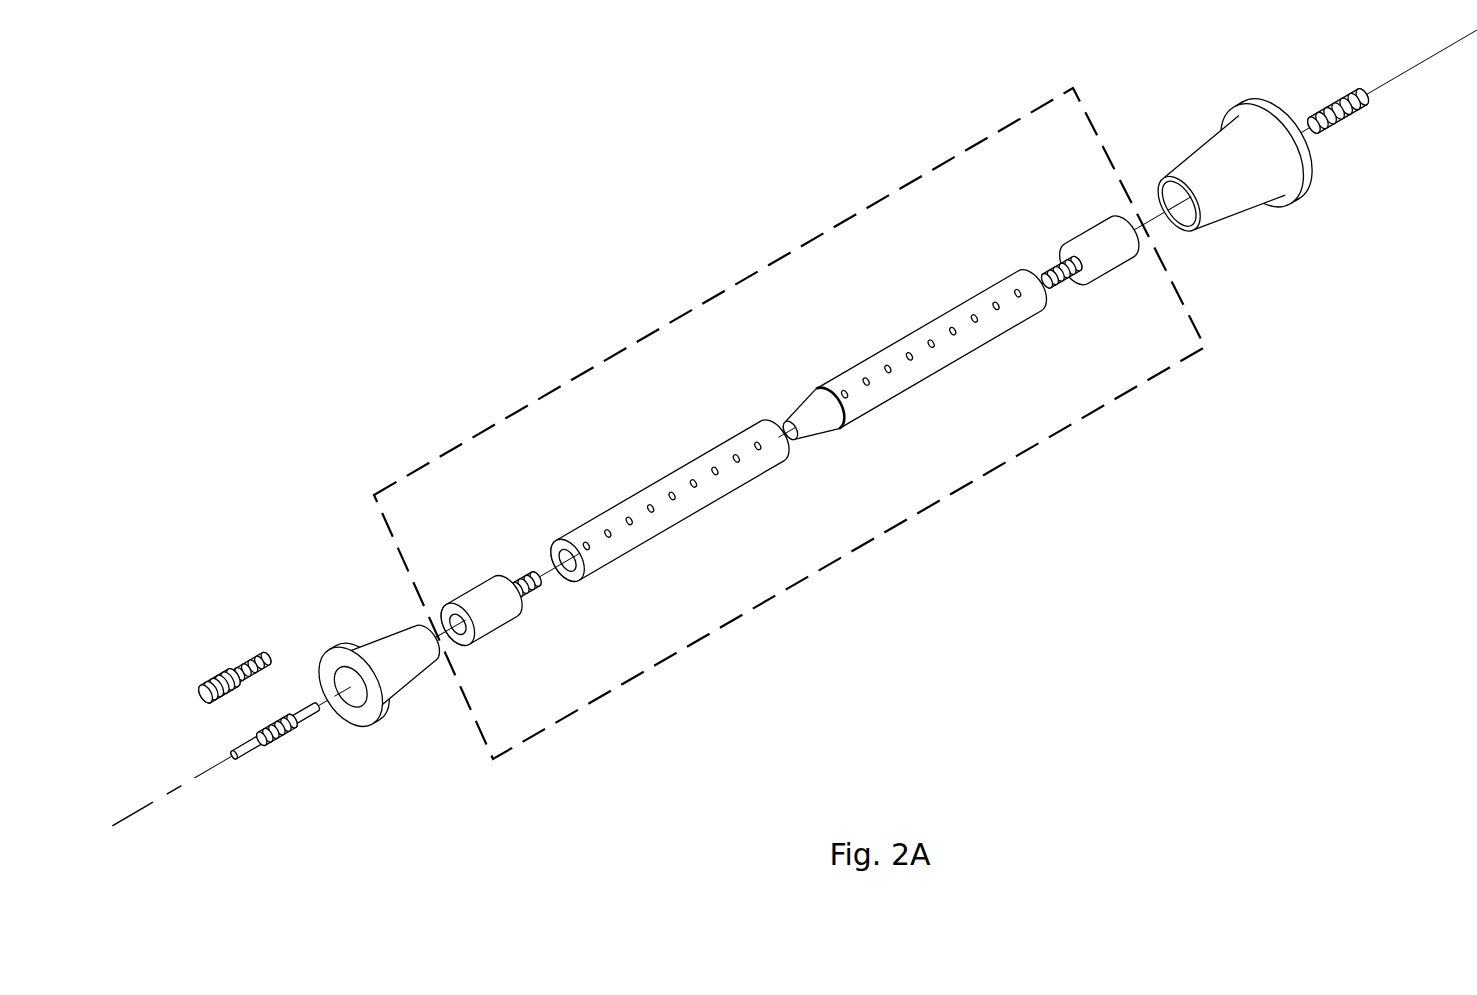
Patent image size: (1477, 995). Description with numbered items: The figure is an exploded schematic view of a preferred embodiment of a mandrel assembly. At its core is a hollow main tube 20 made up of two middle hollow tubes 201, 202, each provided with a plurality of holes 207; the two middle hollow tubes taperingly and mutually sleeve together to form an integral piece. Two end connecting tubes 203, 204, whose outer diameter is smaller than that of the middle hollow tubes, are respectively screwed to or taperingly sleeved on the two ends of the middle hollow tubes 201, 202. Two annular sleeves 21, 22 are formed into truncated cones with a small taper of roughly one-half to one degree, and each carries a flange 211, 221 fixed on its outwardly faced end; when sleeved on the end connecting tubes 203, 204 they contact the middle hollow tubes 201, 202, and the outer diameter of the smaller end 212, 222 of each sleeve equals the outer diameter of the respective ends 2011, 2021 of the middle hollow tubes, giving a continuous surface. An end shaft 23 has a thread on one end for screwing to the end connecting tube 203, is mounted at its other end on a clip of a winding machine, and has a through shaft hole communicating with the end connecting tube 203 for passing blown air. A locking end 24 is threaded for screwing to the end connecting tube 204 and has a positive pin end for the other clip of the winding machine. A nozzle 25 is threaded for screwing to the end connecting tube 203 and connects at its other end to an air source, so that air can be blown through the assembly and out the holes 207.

The hollow main tube 20 is at (716, 279).
The middle hollow tube 201 is at (626, 497).
The end of middle hollow tube 2011 is at (567, 560).
The middle hollow tube 202 is at (910, 321).
The end of middle hollow tube 2021 is at (860, 377).
The end connecting tube 203 is at (460, 597).
The end connecting tube 204 is at (1088, 227).
The holes 207 is at (570, 530).
The annular sleeve 21 is at (359, 640).
The flange 211 is at (366, 678).
The smaller end 212 is at (378, 638).
The annular sleeve 22 is at (1285, 234).
The flange 221 is at (1267, 152).
The smaller end 222 is at (1228, 213).
The end shaft 23 is at (282, 748).
The locking end 24 is at (1363, 110).
The nozzle 25 is at (228, 668).